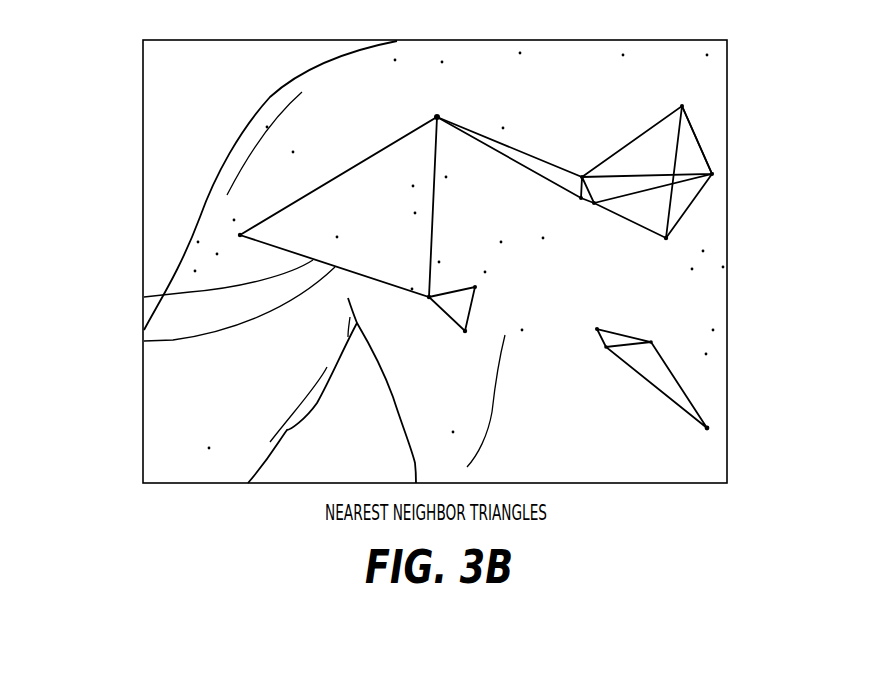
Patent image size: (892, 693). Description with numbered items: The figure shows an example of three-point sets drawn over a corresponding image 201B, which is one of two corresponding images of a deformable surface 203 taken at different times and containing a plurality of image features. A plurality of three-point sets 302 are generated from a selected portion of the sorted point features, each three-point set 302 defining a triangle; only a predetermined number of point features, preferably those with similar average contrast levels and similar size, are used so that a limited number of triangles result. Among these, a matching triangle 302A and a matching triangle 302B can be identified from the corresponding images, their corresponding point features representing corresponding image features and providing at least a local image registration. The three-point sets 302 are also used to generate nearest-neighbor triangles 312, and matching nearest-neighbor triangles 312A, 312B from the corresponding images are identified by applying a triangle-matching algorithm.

The corresponding image 201B is at (102, 140).
The deformable surface 203 is at (578, 98).
The three-point set 302 is at (683, 213).
The matching triangle 302A is at (687, 138).
The matching nearest-neighbor triangle 312A is at (698, 160).
The matching triangle 302B is at (144, 297).
The matching nearest-neighbor triangle 312B is at (144, 341).
The nearest-neighbor triangles 312 is at (622, 500).